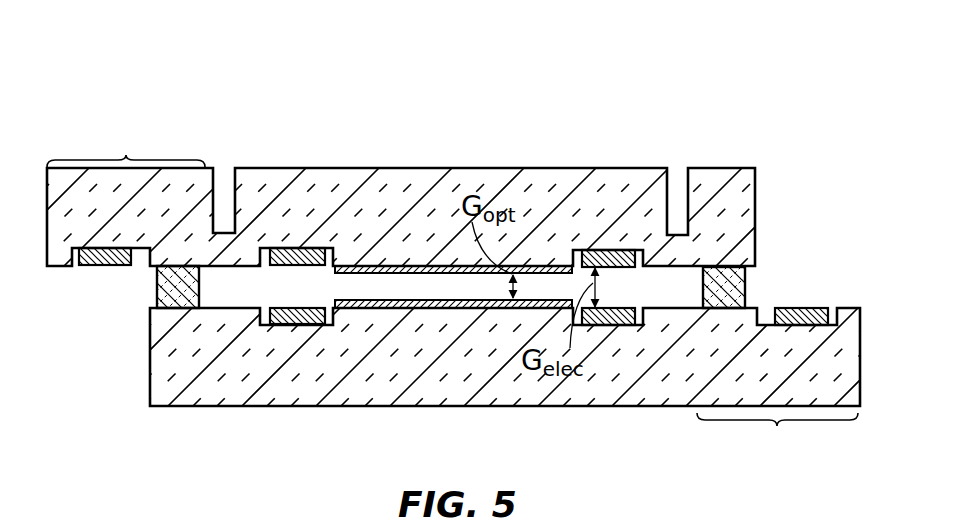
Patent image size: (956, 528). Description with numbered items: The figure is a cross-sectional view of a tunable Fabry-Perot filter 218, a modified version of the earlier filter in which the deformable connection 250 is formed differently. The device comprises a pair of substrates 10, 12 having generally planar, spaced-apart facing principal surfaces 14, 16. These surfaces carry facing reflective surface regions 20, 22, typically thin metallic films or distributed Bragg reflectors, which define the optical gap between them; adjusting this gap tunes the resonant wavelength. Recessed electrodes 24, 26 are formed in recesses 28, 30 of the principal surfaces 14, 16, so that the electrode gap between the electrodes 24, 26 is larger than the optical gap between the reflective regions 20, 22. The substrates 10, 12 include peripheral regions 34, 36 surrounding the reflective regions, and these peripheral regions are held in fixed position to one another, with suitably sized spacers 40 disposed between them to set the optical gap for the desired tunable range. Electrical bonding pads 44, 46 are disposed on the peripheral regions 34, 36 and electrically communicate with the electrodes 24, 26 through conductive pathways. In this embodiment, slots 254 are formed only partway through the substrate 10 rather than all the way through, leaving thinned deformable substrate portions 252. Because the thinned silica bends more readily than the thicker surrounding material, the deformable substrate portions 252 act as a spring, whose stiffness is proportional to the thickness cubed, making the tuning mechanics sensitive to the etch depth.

The substrate 10 is at (428, 167).
The substrate 12 is at (302, 398).
The principal surface 14 is at (420, 275).
The principal surface 16 is at (425, 297).
The reflective surface region 20 is at (548, 266).
The reflective surface region 22 is at (417, 310).
The recessed electrode 24 is at (298, 247).
The recessed electrode 26 is at (298, 322).
The recess 28 is at (330, 270).
The recess 30 is at (265, 307).
The peripheral region 34 is at (126, 147).
The peripheral region 36 is at (777, 433).
The spacer 40 is at (157, 298).
The electrical bonding pad 44 is at (103, 269).
The electrical bonding pad 46 is at (803, 308).
The Fabry-Perot filter 218 is at (162, 110).
The deformable connection 250 is at (675, 162).
The deformable substrate portion 252 is at (672, 258).
The slot 254 is at (677, 212).